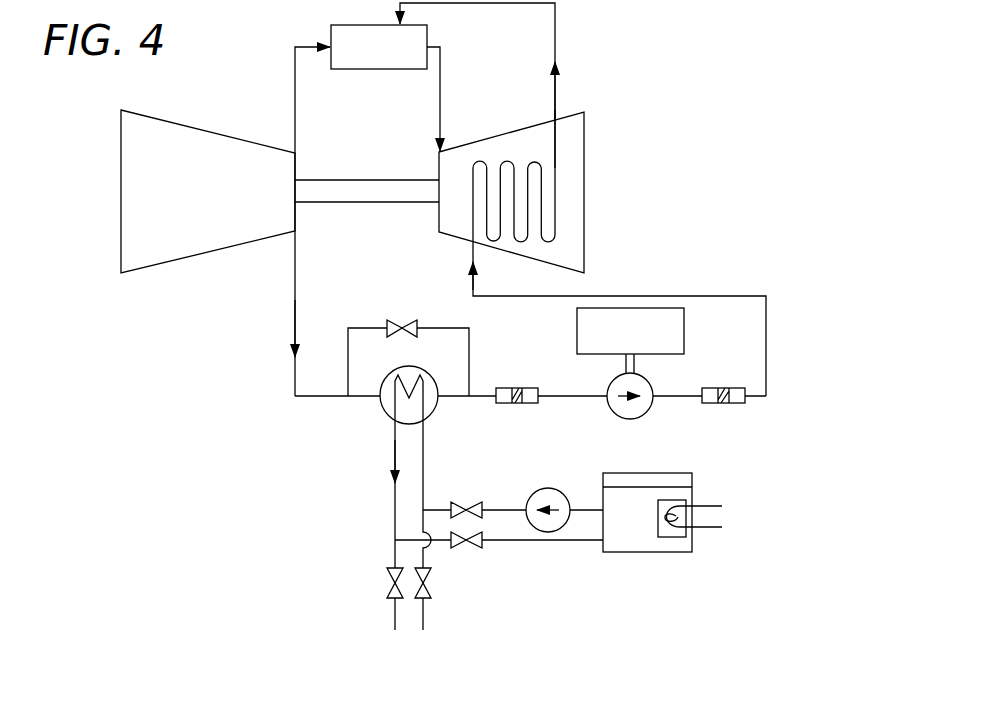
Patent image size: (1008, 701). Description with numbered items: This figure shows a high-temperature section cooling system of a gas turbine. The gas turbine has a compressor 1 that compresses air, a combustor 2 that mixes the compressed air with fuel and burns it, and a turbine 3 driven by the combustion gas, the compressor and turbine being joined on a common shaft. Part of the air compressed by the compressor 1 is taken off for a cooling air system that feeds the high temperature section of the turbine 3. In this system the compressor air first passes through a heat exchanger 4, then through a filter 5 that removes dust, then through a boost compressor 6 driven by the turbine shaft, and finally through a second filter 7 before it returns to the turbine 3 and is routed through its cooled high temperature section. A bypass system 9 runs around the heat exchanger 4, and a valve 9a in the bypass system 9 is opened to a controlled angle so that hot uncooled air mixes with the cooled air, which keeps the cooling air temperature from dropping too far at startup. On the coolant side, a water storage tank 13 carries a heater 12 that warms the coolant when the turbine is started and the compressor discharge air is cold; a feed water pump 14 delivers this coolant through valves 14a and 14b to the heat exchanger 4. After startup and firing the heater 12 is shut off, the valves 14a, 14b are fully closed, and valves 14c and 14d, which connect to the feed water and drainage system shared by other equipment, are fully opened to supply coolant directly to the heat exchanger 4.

The compressor 1 is at (212, 203).
The combustor 2 is at (384, 57).
The turbine 3 is at (578, 265).
The heat exchanger 4 is at (386, 374).
The filter 5 is at (505, 388).
The boost compressor 6 is at (608, 385).
The filter 7 is at (721, 388).
The bypass system 9 is at (360, 328).
The valve 9a is at (405, 320).
The heater 12 is at (672, 538).
The water storage tank 13 is at (668, 473).
The feed water pump 14 is at (546, 488).
The valve 14a is at (470, 502).
The valve 14b is at (476, 547).
The valve 14c is at (430, 590).
The valve 14d is at (387, 588).